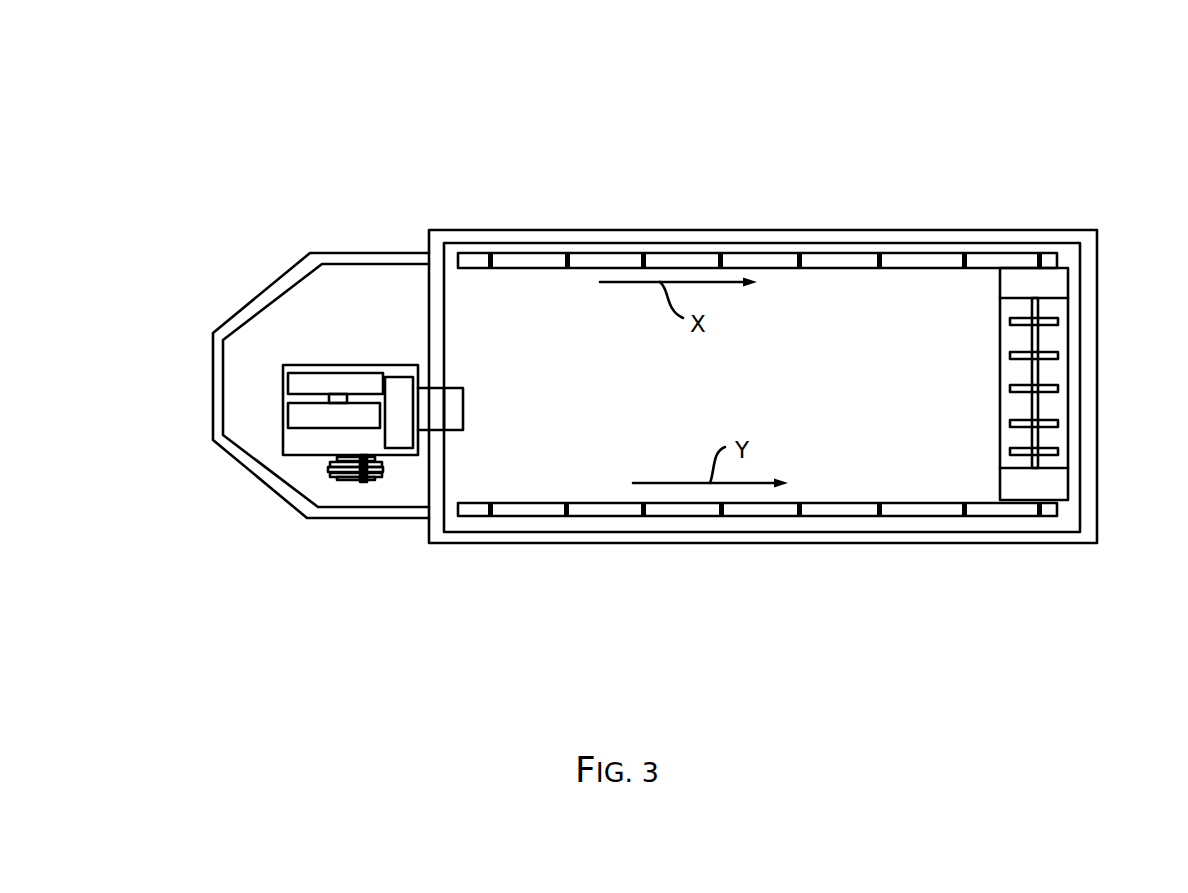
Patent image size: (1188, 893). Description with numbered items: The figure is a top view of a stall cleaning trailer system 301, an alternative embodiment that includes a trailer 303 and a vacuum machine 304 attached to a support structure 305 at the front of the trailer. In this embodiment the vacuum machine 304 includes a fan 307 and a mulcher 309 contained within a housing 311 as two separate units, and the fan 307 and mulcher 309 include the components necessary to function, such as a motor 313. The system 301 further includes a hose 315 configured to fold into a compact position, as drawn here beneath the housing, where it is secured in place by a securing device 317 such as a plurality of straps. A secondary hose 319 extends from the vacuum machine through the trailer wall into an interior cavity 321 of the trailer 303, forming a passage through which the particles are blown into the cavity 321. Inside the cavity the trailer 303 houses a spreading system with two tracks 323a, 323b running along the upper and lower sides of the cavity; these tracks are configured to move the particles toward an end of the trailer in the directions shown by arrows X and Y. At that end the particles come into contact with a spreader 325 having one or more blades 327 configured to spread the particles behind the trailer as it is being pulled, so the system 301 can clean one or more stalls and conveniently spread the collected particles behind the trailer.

The stall cleaning trailer system 301 is at (232, 89).
The trailer 303 is at (682, 544).
The vacuum machine 304 is at (326, 417).
The support structure 305 is at (247, 300).
The fan 307 is at (305, 428).
The mulcher 309 is at (402, 377).
The housing 311 is at (288, 414).
The motor 313 is at (288, 378).
The hose 315 is at (354, 521).
The securing device 317 is at (365, 483).
The secondary hose 319 is at (465, 413).
The interior cavity 321 is at (574, 294).
The track 323a is at (833, 270).
The track 323b is at (530, 502).
The spreader 325 is at (1046, 384).
The blade 327 is at (1058, 322).